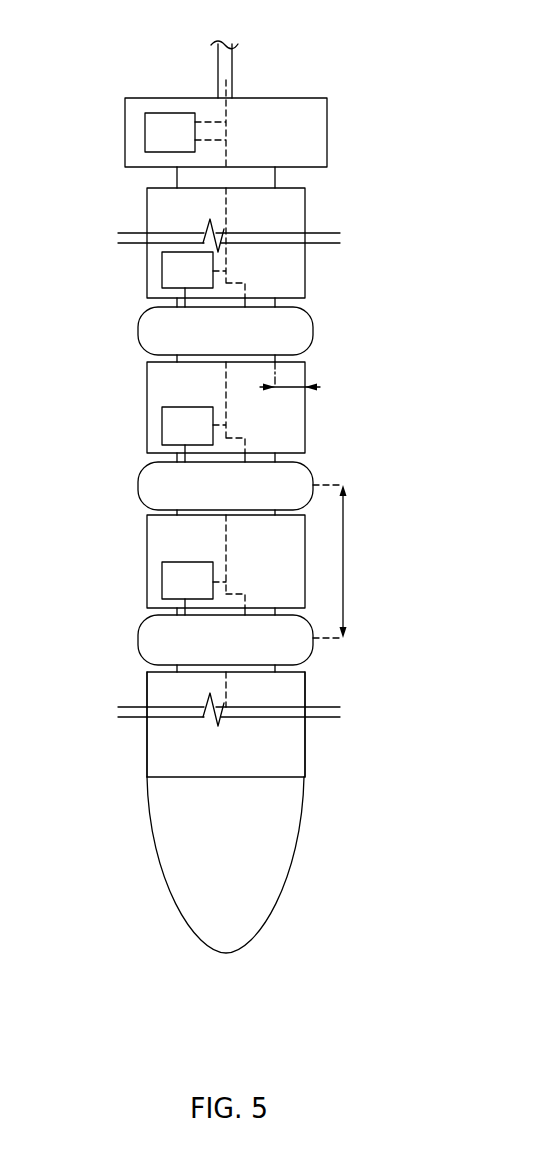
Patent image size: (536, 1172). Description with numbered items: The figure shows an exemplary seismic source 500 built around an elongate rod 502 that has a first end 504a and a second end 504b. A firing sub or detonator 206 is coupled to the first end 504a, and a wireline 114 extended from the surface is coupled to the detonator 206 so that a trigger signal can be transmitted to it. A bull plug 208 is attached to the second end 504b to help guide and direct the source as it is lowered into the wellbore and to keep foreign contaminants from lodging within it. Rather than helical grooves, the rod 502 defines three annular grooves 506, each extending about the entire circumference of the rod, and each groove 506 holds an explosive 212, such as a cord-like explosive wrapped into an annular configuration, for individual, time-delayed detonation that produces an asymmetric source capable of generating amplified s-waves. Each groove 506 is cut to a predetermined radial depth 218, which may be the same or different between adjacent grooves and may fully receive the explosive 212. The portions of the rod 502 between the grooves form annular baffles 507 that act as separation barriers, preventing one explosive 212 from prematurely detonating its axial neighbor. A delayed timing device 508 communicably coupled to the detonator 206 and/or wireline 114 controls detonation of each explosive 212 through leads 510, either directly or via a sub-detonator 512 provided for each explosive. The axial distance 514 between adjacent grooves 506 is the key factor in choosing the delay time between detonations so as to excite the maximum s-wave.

The wireline 114 is at (233, 66).
The detonator 206 is at (127, 140).
The delayed timing device 508 is at (187, 142).
The leads 510 is at (229, 157).
The seismic source 500 is at (380, 153).
The first end 504a is at (150, 211).
The annular baffles 507 is at (140, 277).
The sub-detonator 512 is at (205, 279).
The annular grooves 506 is at (148, 300).
The explosive 212 is at (150, 322).
The radial depth 218 is at (290, 387).
The elongate rod 502 is at (299, 415).
The axial distance 514 is at (345, 577).
The second end 504b is at (150, 751).
The bull plug 208 is at (280, 874).